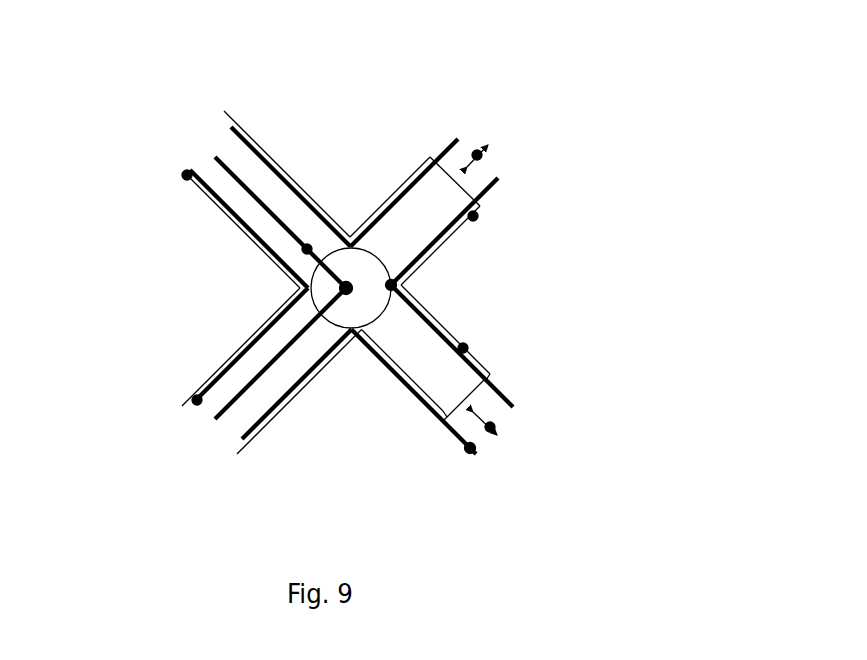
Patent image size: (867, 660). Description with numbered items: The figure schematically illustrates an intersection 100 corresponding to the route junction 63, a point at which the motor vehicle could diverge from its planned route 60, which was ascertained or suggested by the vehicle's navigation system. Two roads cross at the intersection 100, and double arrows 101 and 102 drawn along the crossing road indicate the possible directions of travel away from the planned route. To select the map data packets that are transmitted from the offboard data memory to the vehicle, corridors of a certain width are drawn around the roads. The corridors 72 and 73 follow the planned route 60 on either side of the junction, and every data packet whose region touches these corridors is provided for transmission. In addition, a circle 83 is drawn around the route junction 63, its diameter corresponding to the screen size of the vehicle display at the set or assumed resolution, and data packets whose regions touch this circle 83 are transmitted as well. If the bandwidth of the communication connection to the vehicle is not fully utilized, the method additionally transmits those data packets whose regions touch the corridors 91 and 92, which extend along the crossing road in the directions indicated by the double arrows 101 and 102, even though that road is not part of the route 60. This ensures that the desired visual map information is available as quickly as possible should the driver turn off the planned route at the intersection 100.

The route 60 is at (307, 249).
The route junction 63 is at (346, 288).
The corridor 72 is at (197, 400).
The corridor 73 is at (187, 175).
The circle 83 is at (395, 285).
The corridor 91 is at (476, 217).
The corridor 92 is at (466, 348).
The intersection 100 is at (473, 450).
The double arrow 101 is at (480, 154).
The double arrow 102 is at (493, 428).